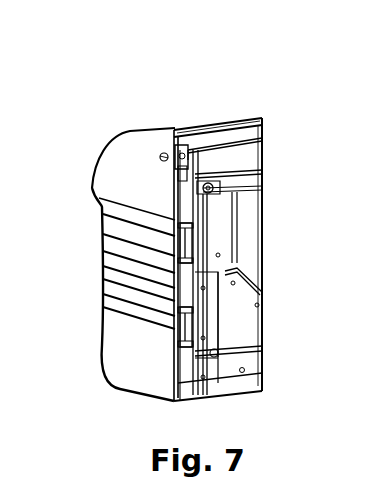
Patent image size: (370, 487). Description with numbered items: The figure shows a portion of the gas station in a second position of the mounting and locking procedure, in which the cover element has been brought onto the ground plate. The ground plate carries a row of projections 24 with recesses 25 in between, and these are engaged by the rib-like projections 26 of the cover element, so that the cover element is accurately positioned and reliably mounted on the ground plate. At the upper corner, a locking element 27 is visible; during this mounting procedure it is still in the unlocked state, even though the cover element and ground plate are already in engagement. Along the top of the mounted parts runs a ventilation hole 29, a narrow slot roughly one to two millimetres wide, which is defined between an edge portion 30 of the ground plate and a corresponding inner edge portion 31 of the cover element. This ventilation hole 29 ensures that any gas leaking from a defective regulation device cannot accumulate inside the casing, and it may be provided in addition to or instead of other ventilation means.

The projections 24 is at (176, 380).
The recesses 25 is at (172, 331).
The projections 26 is at (106, 298).
The locking element 27 is at (184, 145).
The ventilation hole 29 is at (243, 128).
The edge portion 30 is at (263, 135).
The edge portion 31 is at (230, 126).